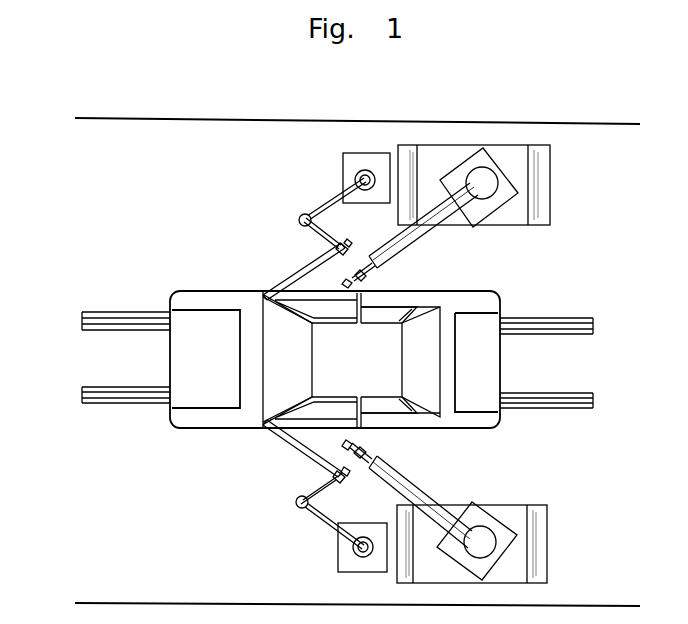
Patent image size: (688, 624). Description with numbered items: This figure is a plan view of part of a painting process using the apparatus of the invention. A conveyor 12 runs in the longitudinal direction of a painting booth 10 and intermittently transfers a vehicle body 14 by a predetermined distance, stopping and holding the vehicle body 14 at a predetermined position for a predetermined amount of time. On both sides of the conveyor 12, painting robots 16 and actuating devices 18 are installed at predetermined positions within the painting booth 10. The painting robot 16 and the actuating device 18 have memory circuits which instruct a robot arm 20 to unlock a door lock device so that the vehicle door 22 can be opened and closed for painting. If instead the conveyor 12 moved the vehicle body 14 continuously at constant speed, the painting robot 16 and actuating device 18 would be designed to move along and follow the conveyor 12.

The painting booth 10 is at (333, 121).
The conveyor 12 is at (540, 409).
The vehicle body 14 is at (230, 427).
The painting robot 16 is at (520, 177).
The actuating device 18 is at (345, 167).
The robot arm 20 is at (318, 238).
The vehicle door 22 is at (283, 272).